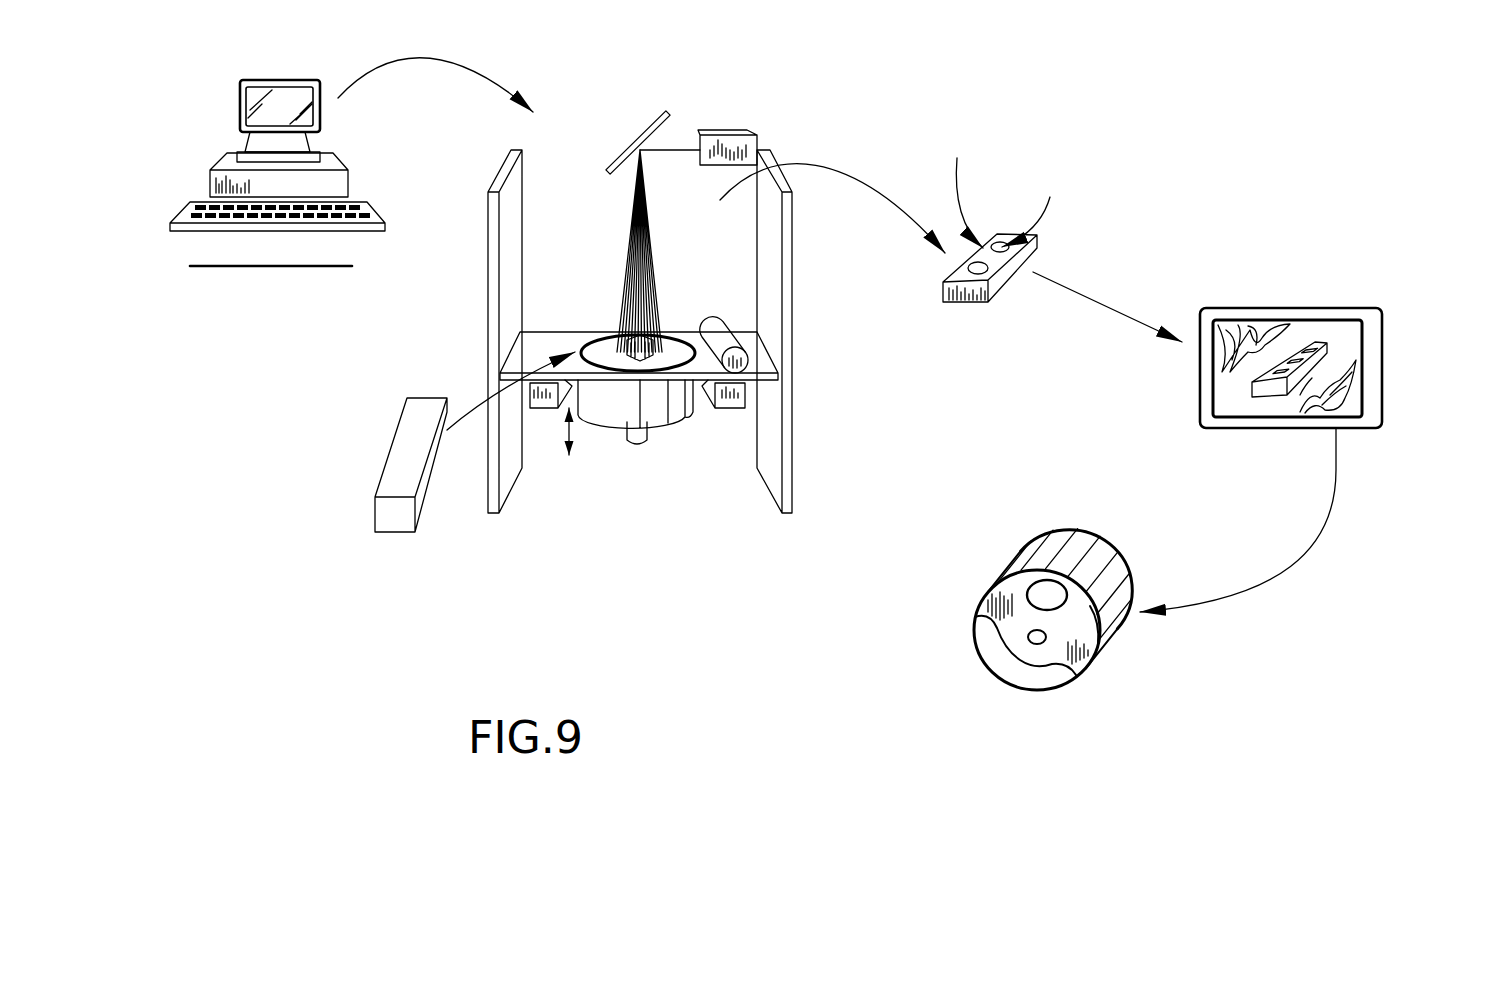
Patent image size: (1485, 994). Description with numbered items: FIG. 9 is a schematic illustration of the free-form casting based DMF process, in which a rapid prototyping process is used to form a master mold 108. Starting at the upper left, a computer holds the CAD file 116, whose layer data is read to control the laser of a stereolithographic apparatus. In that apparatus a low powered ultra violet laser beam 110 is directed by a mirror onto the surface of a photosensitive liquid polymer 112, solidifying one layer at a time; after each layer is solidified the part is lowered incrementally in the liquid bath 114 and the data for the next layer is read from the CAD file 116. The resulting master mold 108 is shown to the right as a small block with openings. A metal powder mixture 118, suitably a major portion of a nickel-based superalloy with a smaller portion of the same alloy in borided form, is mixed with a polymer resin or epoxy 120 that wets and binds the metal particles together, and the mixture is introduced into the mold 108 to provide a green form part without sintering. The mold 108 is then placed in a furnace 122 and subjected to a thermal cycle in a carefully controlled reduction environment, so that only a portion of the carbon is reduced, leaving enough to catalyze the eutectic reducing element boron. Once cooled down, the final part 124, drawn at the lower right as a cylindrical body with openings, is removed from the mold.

The master mold 108 is at (955, 302).
The ultra violet laser beam 110 is at (723, 128).
The photosensitive liquid polymer 112 is at (403, 443).
The liquid bath 114 is at (660, 428).
The CAD file 116 is at (240, 66).
The metal powder mixture 118 is at (930, 120).
The polymer resin or epoxy 120 is at (1102, 168).
The furnace 122 is at (1382, 327).
The final part 124 is at (973, 630).